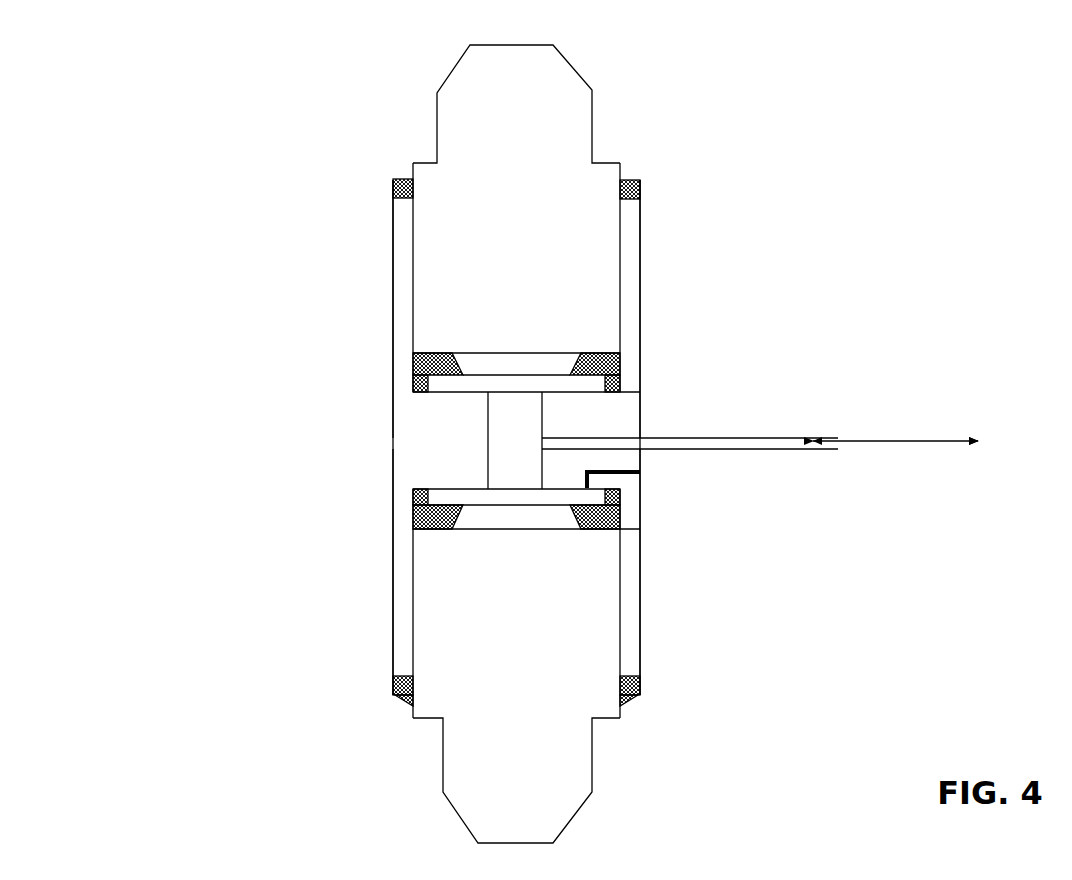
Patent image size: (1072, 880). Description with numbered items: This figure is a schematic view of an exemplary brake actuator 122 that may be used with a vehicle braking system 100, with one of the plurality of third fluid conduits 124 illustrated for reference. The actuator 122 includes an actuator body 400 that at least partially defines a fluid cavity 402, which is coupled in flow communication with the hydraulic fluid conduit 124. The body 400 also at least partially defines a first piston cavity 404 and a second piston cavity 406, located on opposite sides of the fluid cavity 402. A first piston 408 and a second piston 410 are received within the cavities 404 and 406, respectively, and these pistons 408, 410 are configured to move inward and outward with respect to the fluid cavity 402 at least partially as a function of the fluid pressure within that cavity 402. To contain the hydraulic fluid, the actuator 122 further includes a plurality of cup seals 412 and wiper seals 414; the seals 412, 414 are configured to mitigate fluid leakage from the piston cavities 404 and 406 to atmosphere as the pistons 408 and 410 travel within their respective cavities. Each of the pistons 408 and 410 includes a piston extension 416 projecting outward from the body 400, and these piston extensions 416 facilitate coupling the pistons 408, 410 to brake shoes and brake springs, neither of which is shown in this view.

The vehicle braking system 100 is at (215, 95).
The brake actuator 122 is at (186, 162).
The third fluid conduit 124 is at (763, 437).
The actuator body 400 is at (393, 316).
The fluid cavity 402 is at (513, 437).
The first piston cavity 404 is at (412, 218).
The second piston cavity 406 is at (412, 582).
The first piston 408 is at (472, 202).
The second piston 410 is at (486, 692).
The cup seals 412 is at (416, 373).
The wiper seals 414 is at (393, 180).
The piston extensions 416 is at (472, 112).